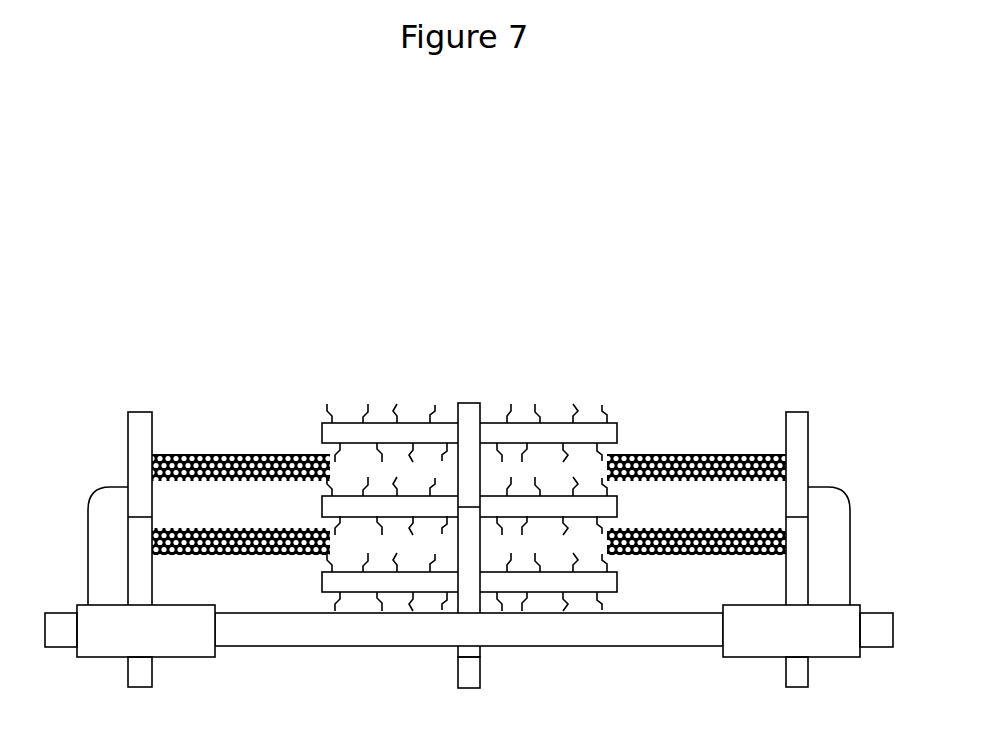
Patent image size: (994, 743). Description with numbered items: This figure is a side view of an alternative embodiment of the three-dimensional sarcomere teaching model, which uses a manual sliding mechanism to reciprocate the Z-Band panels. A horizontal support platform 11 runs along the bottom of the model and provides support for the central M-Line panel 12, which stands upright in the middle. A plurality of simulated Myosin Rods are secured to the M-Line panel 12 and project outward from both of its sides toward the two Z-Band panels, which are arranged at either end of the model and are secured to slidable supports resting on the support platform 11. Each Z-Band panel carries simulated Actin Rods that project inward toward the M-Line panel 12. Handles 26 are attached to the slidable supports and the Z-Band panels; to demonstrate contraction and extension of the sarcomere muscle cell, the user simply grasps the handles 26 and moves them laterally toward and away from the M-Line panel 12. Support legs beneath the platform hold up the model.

The support platform 11 is at (374, 633).
The M-Line panel 12 is at (470, 410).
The handle 26 is at (68, 540).